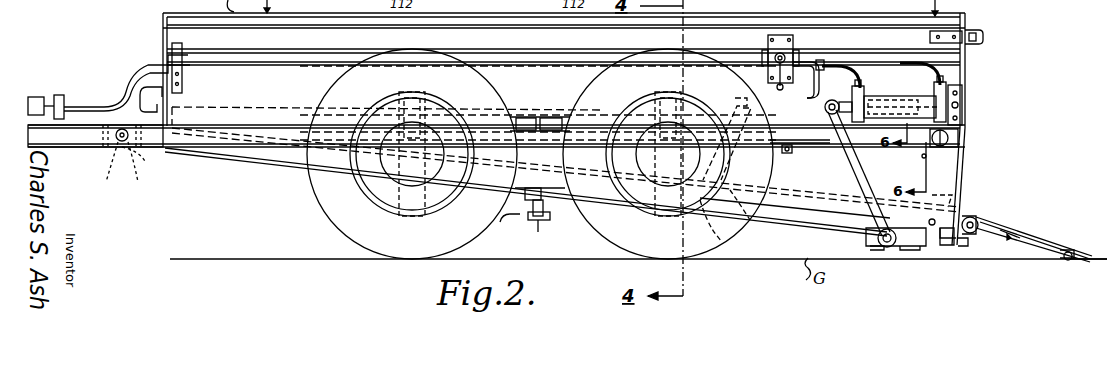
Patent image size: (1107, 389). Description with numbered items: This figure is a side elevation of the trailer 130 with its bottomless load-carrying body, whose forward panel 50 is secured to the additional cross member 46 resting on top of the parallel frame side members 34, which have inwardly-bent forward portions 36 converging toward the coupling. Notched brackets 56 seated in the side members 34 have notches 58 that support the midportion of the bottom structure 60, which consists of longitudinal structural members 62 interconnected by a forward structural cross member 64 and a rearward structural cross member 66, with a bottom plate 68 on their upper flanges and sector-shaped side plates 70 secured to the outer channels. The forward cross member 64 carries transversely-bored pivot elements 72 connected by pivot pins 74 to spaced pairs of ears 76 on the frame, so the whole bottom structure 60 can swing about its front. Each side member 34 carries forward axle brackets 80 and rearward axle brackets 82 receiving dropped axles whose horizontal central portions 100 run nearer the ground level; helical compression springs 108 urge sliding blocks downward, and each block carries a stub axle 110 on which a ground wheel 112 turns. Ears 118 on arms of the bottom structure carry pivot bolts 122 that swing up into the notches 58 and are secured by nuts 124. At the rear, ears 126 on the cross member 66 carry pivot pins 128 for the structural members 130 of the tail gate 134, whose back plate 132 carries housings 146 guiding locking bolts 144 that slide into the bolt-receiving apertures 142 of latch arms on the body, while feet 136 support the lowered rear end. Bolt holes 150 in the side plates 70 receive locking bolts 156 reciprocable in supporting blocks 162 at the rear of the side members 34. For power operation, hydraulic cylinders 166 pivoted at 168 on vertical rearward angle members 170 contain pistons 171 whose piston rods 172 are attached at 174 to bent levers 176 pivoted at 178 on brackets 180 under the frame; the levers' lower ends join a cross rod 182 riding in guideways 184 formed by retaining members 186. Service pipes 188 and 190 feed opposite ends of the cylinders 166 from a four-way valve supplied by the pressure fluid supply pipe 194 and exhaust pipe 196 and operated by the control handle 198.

The side members 34 is at (193, 140).
The forward portions 36 is at (78, 144).
The additional cross member 46 is at (144, 100).
The forward panel 50 is at (164, 30).
The notched brackets 56 is at (536, 118).
The notches 58 is at (553, 120).
The bottom structure 60 is at (278, 166).
The longitudinal structural members 62 is at (780, 220).
The forward structural cross member 64 is at (146, 154).
The rearward structural cross member 66 is at (965, 250).
The bottom plate 68 is at (732, 184).
The side plates 70 is at (966, 170).
The pivot elements 72 is at (146, 184).
The pivot pins 74 is at (109, 166).
The ears 76 is at (118, 142).
The forward axle brackets 80 is at (438, 102).
The rearward axle brackets 82 is at (649, 104).
The central portions 100 is at (411, 218).
The helical compression springs 108 is at (388, 98).
The stub axle 110 is at (381, 174).
The ground wheel 112 is at (342, 230).
The ears 118 is at (512, 192).
The pivot bolts 122 is at (516, 223).
The nuts 124 is at (548, 232).
The ears 126 is at (966, 204).
The pivot pins 128 is at (978, 222).
The structural members 130 is at (25, 130).
The back plate 132 is at (1039, 232).
The tail gate 134 is at (1012, 244).
The feet 136 is at (942, 262).
The bolt-receiving apertures 142 is at (980, 34).
The locking bolts 144 is at (1072, 264).
The housings 146 is at (1056, 262).
The bolt holes 150 is at (930, 216).
The locking bolts 156 is at (908, 150).
The supporting blocks 162 is at (958, 134).
The hydraulic cylinders 166 is at (884, 94).
The pivot mounting 168 is at (964, 102).
The rearward angle members 170 is at (964, 65).
The pistons 171 is at (906, 96).
The piston rods 172 is at (852, 98).
The pivot connection 174 is at (833, 100).
The bent levers 176 is at (834, 171).
The pivot mounting 178 is at (808, 174).
The brackets 180 is at (800, 138).
The cross rod 182 is at (885, 248).
The guideways 184 is at (876, 244).
The retaining members 186 is at (906, 250).
The service pipe 188 is at (753, 232).
The service pipe 190 is at (718, 258).
The pressure fluid supply pipe 194 is at (70, 104).
The exhaust pipe 196 is at (252, 68).
The control handle 198 is at (778, 86).